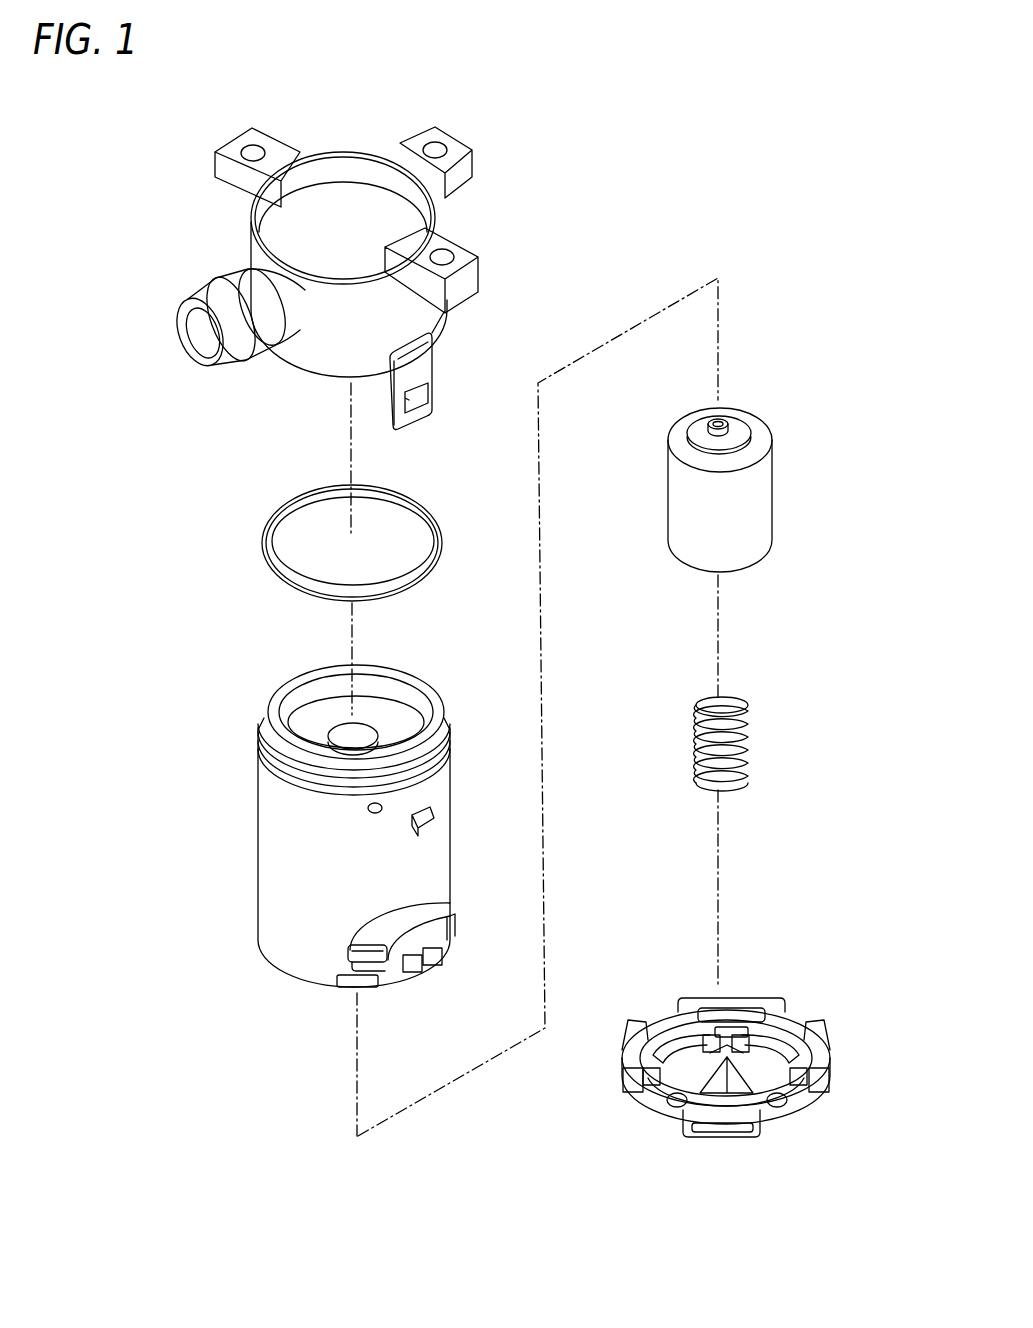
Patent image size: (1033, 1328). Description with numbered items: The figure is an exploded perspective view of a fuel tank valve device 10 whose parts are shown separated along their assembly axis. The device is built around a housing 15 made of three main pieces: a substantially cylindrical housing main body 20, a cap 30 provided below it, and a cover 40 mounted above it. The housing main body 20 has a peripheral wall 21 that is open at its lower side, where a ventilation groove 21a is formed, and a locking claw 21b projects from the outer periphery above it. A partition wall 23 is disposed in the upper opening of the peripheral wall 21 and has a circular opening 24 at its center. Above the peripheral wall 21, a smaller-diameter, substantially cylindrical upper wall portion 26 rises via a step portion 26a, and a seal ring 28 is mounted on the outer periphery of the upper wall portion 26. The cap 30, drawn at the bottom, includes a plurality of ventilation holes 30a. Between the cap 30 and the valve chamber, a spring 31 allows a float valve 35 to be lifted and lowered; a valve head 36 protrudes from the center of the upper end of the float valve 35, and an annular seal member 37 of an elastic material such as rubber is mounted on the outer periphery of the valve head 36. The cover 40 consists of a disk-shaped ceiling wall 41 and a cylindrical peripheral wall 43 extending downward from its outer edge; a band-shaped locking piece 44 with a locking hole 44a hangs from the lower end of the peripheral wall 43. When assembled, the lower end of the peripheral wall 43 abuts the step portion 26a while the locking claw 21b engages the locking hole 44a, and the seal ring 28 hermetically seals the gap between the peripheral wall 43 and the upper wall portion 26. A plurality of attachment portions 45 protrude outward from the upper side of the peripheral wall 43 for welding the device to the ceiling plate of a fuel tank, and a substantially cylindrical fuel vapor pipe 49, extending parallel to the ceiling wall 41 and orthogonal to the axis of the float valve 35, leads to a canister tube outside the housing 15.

The fuel tank valve device 10 is at (555, 186).
The housing 15 is at (150, 606).
The housing main body 20 is at (245, 843).
The peripheral wall 21 is at (443, 803).
The ventilation groove 21a is at (375, 958).
The locking claw 21b is at (428, 828).
The partition wall 23 is at (328, 712).
The opening 24 is at (365, 730).
The upper wall portion 26 is at (407, 693).
The step portion 26a is at (264, 754).
The seal ring 28 is at (437, 540).
The cap 30 is at (645, 1125).
The ventilation holes 30a is at (668, 1050).
The spring 31 is at (748, 743).
The float valve 35 is at (757, 500).
The valve head 36 is at (720, 418).
The annular seal member 37 is at (743, 425).
The cover 40 is at (273, 393).
The ceiling wall 41 is at (277, 235).
The peripheral wall 43 is at (322, 362).
The locking piece 44 is at (422, 365).
The locking hole 44a is at (428, 413).
The attachment portions 45 is at (273, 152).
The fuel vapor pipe 49 is at (223, 357).